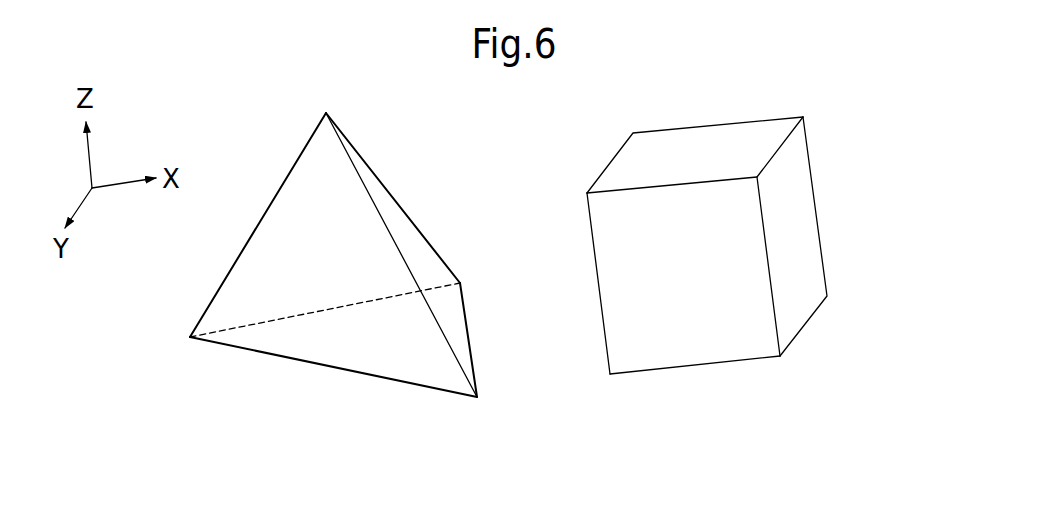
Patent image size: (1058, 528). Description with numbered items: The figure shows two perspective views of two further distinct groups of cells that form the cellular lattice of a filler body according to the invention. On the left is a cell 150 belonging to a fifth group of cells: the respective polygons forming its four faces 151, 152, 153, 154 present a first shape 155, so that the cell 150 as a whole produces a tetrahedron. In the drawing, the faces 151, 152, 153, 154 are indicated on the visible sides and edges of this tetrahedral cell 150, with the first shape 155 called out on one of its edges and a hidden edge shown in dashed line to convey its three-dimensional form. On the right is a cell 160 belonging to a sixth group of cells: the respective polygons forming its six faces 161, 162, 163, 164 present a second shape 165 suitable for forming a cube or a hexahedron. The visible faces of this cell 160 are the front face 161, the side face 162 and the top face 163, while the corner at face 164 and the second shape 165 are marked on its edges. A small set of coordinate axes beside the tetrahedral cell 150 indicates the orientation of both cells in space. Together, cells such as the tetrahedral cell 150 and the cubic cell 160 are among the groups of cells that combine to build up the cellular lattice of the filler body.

The cell 150 is at (309, 276).
The face 151 is at (328, 350).
The face 152 is at (407, 233).
The face 153 is at (490, 330).
The face 154 is at (278, 167).
The first shape 155 is at (382, 177).
The cell 160 is at (731, 241).
The face 161 is at (683, 337).
The face 162 is at (793, 175).
The face 163 is at (695, 148).
The face 164 is at (780, 360).
The second shape 165 is at (632, 295).